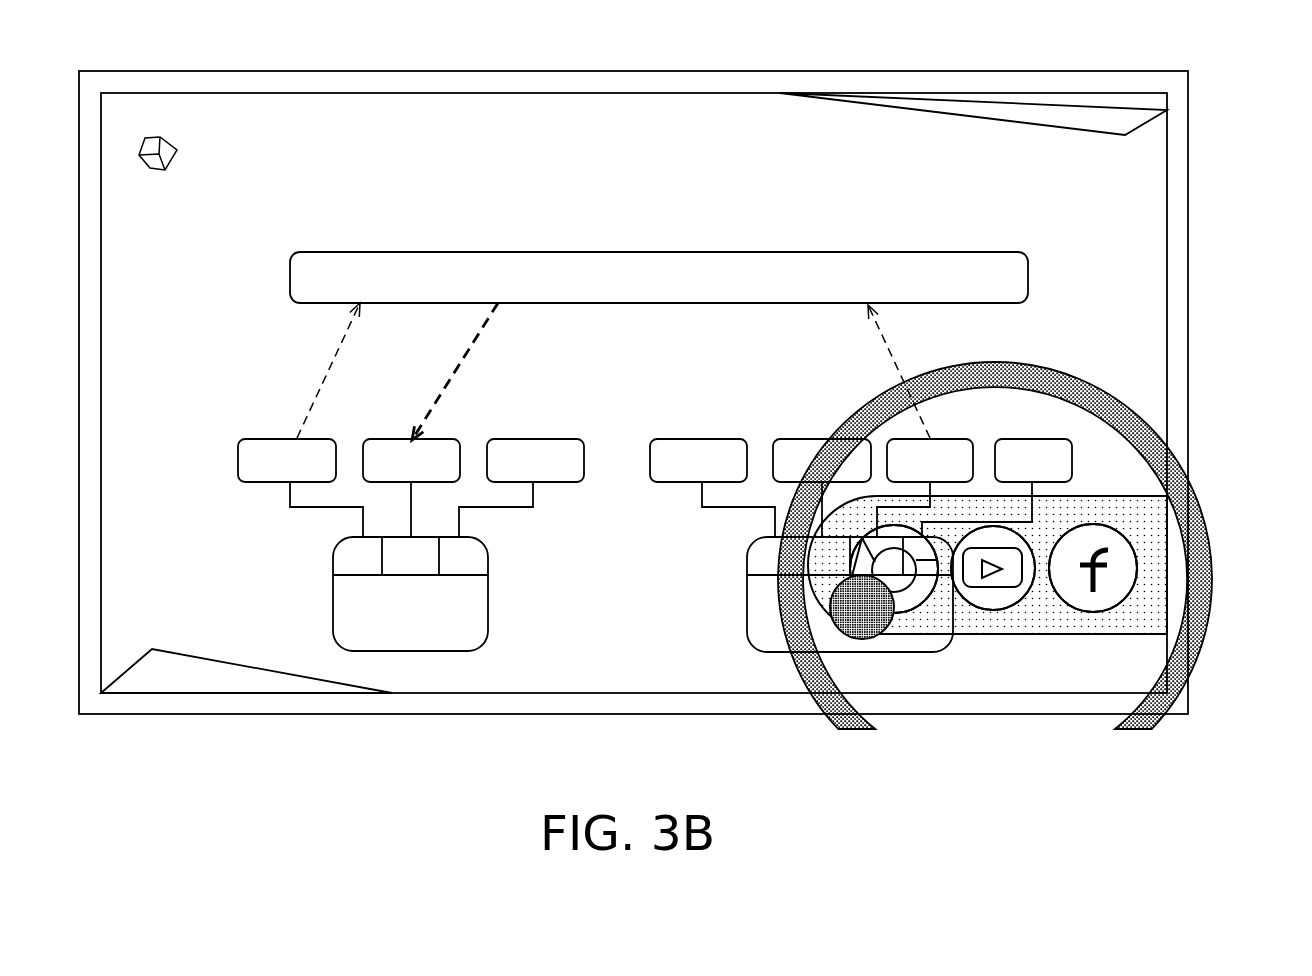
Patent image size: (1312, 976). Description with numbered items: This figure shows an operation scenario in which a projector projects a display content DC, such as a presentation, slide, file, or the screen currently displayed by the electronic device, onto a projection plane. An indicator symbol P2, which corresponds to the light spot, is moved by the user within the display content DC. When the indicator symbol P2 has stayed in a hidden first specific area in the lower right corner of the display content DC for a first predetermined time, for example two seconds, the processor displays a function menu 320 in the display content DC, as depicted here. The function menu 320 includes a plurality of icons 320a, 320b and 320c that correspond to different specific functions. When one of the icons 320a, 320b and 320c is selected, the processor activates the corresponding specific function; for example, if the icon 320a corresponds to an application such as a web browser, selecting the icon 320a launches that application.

The display content DC is at (806, 138).
The function menu 320 is at (1036, 600).
The icon 320a is at (904, 613).
The icon 320b is at (988, 612).
The icon 320c is at (1086, 612).
The indicator symbol P2 is at (858, 640).